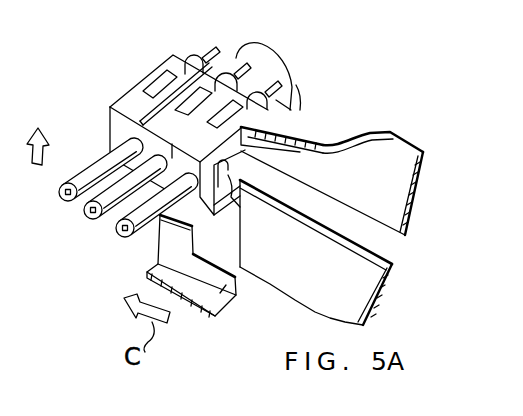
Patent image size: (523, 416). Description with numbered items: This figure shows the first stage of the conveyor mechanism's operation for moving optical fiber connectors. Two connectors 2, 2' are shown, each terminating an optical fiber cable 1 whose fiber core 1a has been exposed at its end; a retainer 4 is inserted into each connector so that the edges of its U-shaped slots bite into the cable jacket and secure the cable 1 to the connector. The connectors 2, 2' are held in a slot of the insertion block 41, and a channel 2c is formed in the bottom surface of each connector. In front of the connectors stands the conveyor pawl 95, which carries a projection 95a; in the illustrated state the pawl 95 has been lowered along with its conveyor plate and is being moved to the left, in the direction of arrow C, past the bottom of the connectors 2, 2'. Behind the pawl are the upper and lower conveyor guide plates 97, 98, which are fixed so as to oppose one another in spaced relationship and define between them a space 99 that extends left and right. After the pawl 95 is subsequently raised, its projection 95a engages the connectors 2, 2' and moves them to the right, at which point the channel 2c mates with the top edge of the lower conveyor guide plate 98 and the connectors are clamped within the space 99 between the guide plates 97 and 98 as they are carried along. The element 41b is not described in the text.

The optical fiber cable 1 is at (115, 278).
The fiber core 1a is at (234, 64).
The connector 2 is at (265, 65).
The connector 2' is at (189, 124).
The channel 2c is at (224, 171).
The retainer 4 is at (192, 101).
The insertion block 41 is at (290, 110).
The tab 41b is at (240, 211).
The conveyor pawl 95 is at (234, 296).
The projection 95a is at (196, 242).
The upper conveyor guide plate 97 is at (406, 183).
The lower conveyor guide plate 98 is at (362, 309).
The space 99 is at (380, 238).